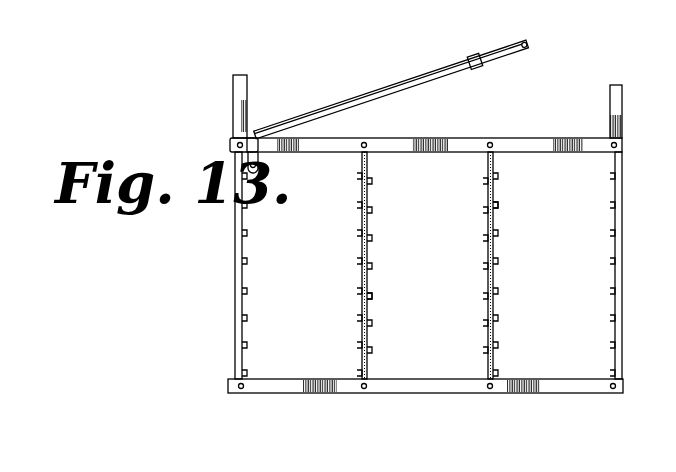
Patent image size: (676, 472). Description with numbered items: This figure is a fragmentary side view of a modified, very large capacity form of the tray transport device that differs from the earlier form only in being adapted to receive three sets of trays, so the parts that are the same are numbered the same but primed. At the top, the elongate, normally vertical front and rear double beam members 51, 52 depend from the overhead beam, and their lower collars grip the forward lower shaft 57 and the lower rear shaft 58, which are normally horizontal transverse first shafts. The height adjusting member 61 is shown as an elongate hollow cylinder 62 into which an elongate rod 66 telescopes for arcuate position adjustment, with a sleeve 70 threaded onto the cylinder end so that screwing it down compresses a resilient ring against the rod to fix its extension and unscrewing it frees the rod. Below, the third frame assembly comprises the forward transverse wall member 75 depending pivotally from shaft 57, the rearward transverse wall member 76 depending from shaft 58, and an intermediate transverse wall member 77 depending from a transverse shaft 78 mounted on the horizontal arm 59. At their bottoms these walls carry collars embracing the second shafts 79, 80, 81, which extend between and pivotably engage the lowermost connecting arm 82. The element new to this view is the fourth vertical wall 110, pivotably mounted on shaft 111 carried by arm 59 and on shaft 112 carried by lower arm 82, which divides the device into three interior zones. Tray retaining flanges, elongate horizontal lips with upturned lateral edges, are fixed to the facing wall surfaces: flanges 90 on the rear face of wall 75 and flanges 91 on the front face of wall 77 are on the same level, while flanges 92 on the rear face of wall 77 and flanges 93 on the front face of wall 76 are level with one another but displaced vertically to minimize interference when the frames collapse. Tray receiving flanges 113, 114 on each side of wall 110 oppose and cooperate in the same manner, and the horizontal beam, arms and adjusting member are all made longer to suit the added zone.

The front double beam members 51 is at (247, 88).
The rear double beam members 52 is at (622, 97).
The forward lower shaft 57 is at (231, 143).
The lower rear shaft 58 is at (617, 145).
The arm 59 is at (465, 124).
The height adjusting member 61 is at (351, 75).
The elongate hollow cylinder 62 is at (525, 50).
The elongate rod 66 is at (415, 82).
The sleeve 70 is at (475, 56).
The forward transverse wall member 75 is at (235, 270).
The rearward transverse wall member 76 is at (622, 246).
The intermediate transverse wall member 77 is at (372, 303).
The intermediate transverse shaft 78 is at (366, 143).
The second shaft 79 is at (238, 386).
The second shaft 80 is at (364, 389).
The second shaft 81 is at (616, 386).
The lower connecting arm 82 is at (442, 386).
The tray retaining flanges 90 is at (247, 232).
The tray retaining flanges 91 is at (362, 262).
The tray retaining flanges 92 is at (372, 238).
The tray retaining flanges 93 is at (610, 231).
The fourth vertical wall 110 is at (498, 249).
The shaft 111 is at (491, 142).
The shaft 112 is at (490, 389).
The tray receiving flanges 113 is at (484, 207).
The tray receiving flanges 114 is at (498, 205).